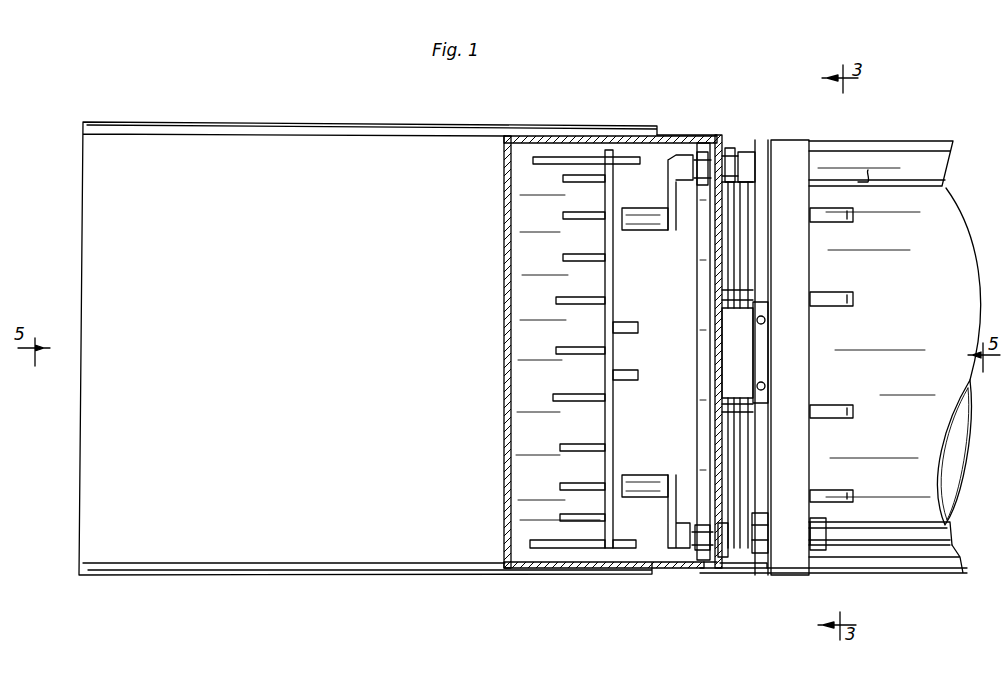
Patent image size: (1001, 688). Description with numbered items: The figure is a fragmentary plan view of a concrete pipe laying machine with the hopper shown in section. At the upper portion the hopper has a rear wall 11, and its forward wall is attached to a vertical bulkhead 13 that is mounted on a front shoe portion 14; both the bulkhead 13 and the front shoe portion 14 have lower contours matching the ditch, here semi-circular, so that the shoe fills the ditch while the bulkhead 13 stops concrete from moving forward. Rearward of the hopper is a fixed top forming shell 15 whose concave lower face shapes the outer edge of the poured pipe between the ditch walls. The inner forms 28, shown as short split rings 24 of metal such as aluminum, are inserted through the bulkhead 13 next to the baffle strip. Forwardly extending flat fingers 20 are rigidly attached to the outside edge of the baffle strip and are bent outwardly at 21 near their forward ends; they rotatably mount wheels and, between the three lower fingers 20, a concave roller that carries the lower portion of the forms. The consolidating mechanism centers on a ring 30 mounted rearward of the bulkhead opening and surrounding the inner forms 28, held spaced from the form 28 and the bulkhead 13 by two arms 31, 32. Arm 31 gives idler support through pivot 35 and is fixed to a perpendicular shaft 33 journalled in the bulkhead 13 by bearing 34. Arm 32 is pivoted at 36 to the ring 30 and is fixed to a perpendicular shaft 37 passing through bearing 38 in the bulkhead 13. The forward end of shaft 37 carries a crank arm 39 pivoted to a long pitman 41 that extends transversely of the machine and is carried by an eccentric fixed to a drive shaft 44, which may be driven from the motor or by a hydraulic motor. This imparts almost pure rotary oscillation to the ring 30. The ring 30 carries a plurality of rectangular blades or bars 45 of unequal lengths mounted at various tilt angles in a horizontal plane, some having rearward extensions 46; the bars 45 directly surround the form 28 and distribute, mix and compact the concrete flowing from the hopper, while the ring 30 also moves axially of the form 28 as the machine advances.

The rear wall 11 is at (504, 244).
The vertical bulkhead 13 is at (719, 371).
The front shoe portion 14 is at (925, 574).
The top forming shell 15 is at (339, 337).
The flat fingers 20 is at (822, 292).
The outward bend of fingers 21 is at (765, 522).
The split rings 24 is at (964, 218).
The inner forms 28 is at (905, 317).
The ring 30 is at (613, 432).
The arm 31 is at (697, 474).
The arm 32 is at (678, 231).
The shaft 33 is at (700, 552).
The bearing 34 is at (722, 560).
The pivot 35 is at (634, 475).
The pivot 36 is at (642, 232).
The shaft 37 is at (702, 150).
The bearing 38 is at (730, 148).
The crank arm 39 is at (748, 152).
The pitman 41 is at (750, 258).
The drive shaft 44 is at (855, 546).
The blades or bars 45 is at (577, 444).
The rearward extensions 46 is at (638, 327).